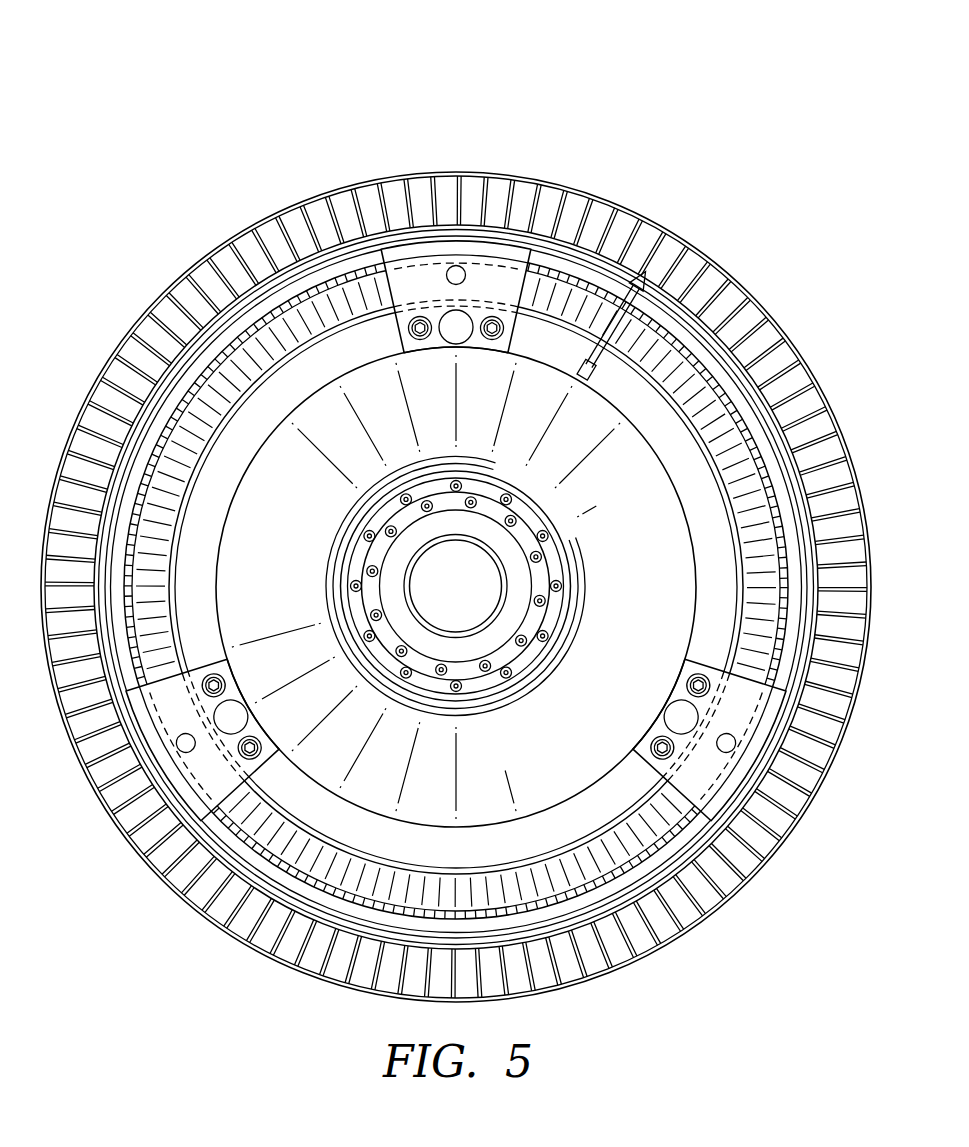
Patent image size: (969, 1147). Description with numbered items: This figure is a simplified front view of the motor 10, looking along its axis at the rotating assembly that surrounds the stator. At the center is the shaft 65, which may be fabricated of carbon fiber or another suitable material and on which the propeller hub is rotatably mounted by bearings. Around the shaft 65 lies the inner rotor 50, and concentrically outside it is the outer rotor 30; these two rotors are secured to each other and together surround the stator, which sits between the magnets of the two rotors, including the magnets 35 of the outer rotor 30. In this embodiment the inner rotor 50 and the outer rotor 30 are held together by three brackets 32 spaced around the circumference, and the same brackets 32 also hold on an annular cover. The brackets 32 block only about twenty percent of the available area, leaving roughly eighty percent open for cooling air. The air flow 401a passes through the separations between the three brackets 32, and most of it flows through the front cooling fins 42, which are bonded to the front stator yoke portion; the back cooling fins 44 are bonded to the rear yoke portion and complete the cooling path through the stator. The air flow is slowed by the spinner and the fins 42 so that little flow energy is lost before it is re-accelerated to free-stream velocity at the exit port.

The motor 10 is at (302, 142).
The outer rotor 30 is at (266, 286).
The brackets 32 is at (488, 252).
The magnets 35 is at (567, 194).
The air flow 401a is at (588, 378).
The front cooling fins 42 is at (468, 880).
The back cooling fins 44 is at (633, 946).
The inner rotor 50 is at (591, 729).
The shaft 65 is at (483, 596).